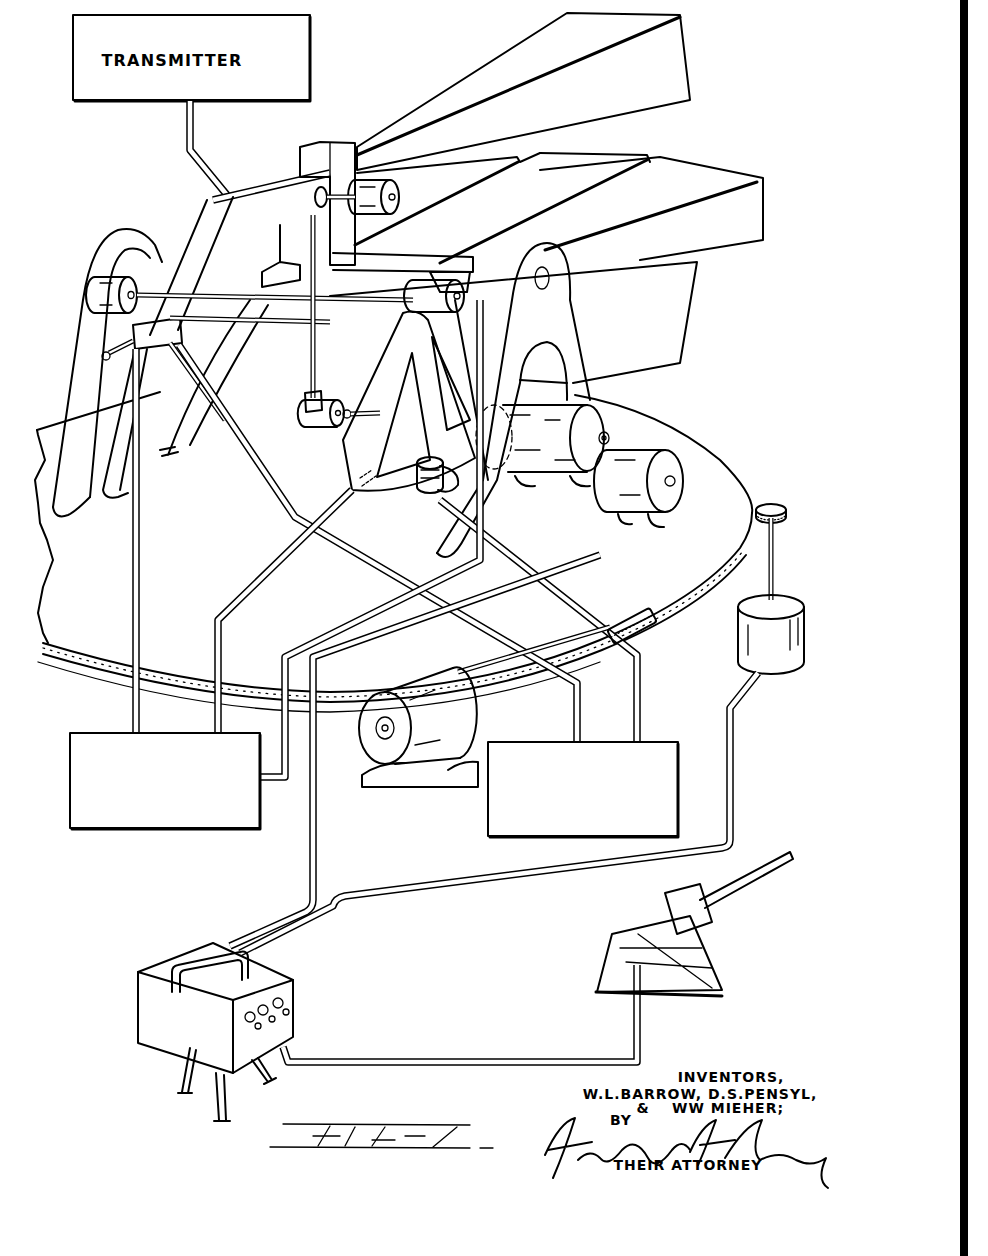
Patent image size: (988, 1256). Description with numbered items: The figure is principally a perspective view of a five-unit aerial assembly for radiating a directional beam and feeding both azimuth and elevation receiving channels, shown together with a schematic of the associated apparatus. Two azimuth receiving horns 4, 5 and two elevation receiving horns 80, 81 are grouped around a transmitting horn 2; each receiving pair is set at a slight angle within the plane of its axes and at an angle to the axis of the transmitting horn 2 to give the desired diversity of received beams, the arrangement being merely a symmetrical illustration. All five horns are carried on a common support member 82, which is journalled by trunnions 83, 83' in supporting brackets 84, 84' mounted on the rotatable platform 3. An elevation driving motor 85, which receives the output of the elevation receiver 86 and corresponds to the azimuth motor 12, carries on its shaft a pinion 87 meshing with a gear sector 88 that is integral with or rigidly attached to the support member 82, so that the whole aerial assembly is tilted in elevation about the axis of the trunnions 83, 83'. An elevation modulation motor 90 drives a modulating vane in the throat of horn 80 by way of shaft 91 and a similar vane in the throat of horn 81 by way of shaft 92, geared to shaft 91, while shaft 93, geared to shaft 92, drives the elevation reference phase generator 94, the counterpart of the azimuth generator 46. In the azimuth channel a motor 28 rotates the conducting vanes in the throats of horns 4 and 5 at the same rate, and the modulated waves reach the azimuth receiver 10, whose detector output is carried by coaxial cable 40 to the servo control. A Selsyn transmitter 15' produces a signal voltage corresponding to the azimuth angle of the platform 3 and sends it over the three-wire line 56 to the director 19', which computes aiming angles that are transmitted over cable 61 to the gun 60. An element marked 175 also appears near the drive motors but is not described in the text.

The transmitting horn 2 is at (590, 156).
The platform 3 is at (749, 490).
The horn 4 is at (510, 157).
The horn 5 is at (712, 172).
The receiver 10 is at (493, 838).
The azimuth motor 12 is at (402, 790).
The Selsyn transmitter 15' is at (747, 590).
The director 19' is at (180, 1023).
The motor 28 is at (438, 280).
The coaxial cable 40 is at (272, 492).
The azimuth reference phase generator 46 is at (100, 298).
The three-wire line 56 is at (378, 890).
The gun 60 is at (718, 902).
The cable 61 is at (462, 1061).
The horn 80 is at (690, 84).
The horn 81 is at (687, 336).
The common support member 82 is at (336, 140).
The trunnion 83 is at (498, 390).
The trunnion 83' is at (119, 358).
The supporting bracket 84 is at (530, 400).
The supporting bracket 84' is at (113, 408).
The elevation driving motor 85 is at (611, 436).
The elevation receiver 86 is at (168, 830).
The pinion 87 is at (430, 492).
The gear sector 88 is at (356, 487).
The elevation modulation motor 90 is at (373, 180).
The shaft 91 is at (277, 186).
The shaft 92 is at (308, 368).
The shaft 93 is at (320, 428).
The elevation reference phase generator 94 is at (342, 432).
The motor 175 is at (652, 518).